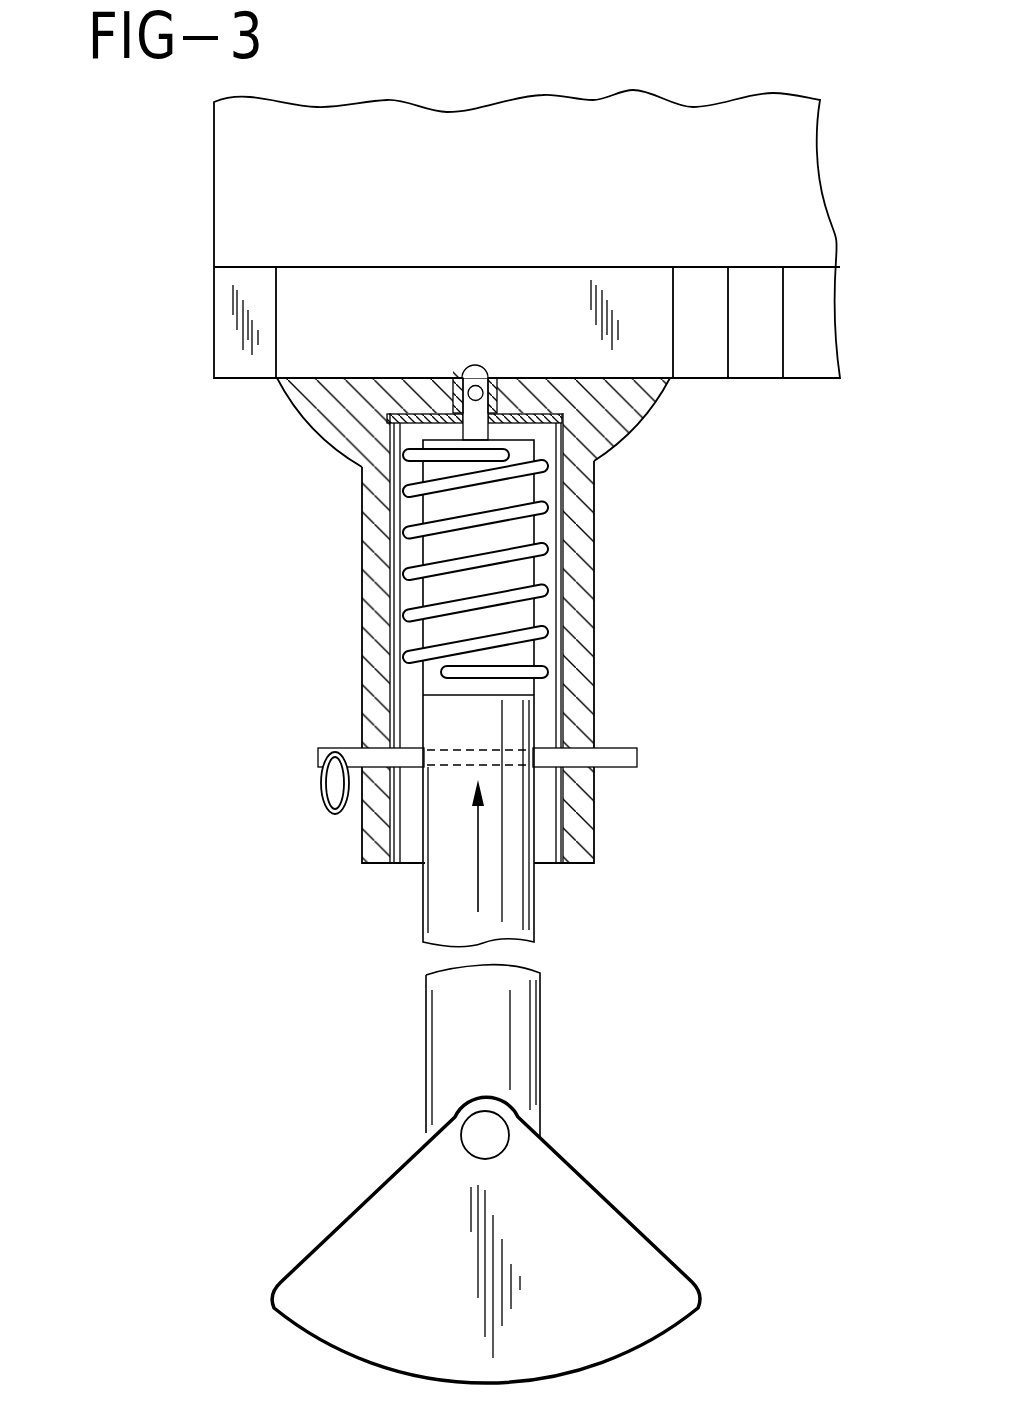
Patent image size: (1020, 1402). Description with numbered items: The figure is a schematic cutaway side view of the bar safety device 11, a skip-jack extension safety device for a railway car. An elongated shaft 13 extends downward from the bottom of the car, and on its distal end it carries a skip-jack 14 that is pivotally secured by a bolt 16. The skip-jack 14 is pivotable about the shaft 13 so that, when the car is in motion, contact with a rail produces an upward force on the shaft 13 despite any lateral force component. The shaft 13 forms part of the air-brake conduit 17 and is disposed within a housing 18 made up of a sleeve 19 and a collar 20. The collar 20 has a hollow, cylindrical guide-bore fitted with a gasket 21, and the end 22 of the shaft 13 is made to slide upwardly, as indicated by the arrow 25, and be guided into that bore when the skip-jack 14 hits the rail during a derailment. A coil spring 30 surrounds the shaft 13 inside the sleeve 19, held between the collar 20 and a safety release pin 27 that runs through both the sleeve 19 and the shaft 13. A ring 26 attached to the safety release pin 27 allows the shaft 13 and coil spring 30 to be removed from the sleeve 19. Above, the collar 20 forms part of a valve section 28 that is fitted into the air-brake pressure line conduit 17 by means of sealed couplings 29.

The bar safety device 11 is at (208, 834).
The elongated shaft 13 is at (537, 907).
The skip-jack 14 is at (672, 1262).
The bolt 16 is at (512, 1138).
The air-brake conduit 17 is at (806, 275).
The housing 18 is at (556, 692).
The sleeve 19 is at (597, 598).
The collar 20 is at (657, 405).
The gasket 21 is at (600, 463).
The end of shaft 22 is at (400, 410).
The arrow 25 is at (477, 895).
The ring 26 is at (320, 782).
The safety release pin 27 is at (640, 760).
The valve section 28 is at (434, 244).
The sealed couplings 29 is at (690, 275).
The coil spring 30 is at (408, 580).